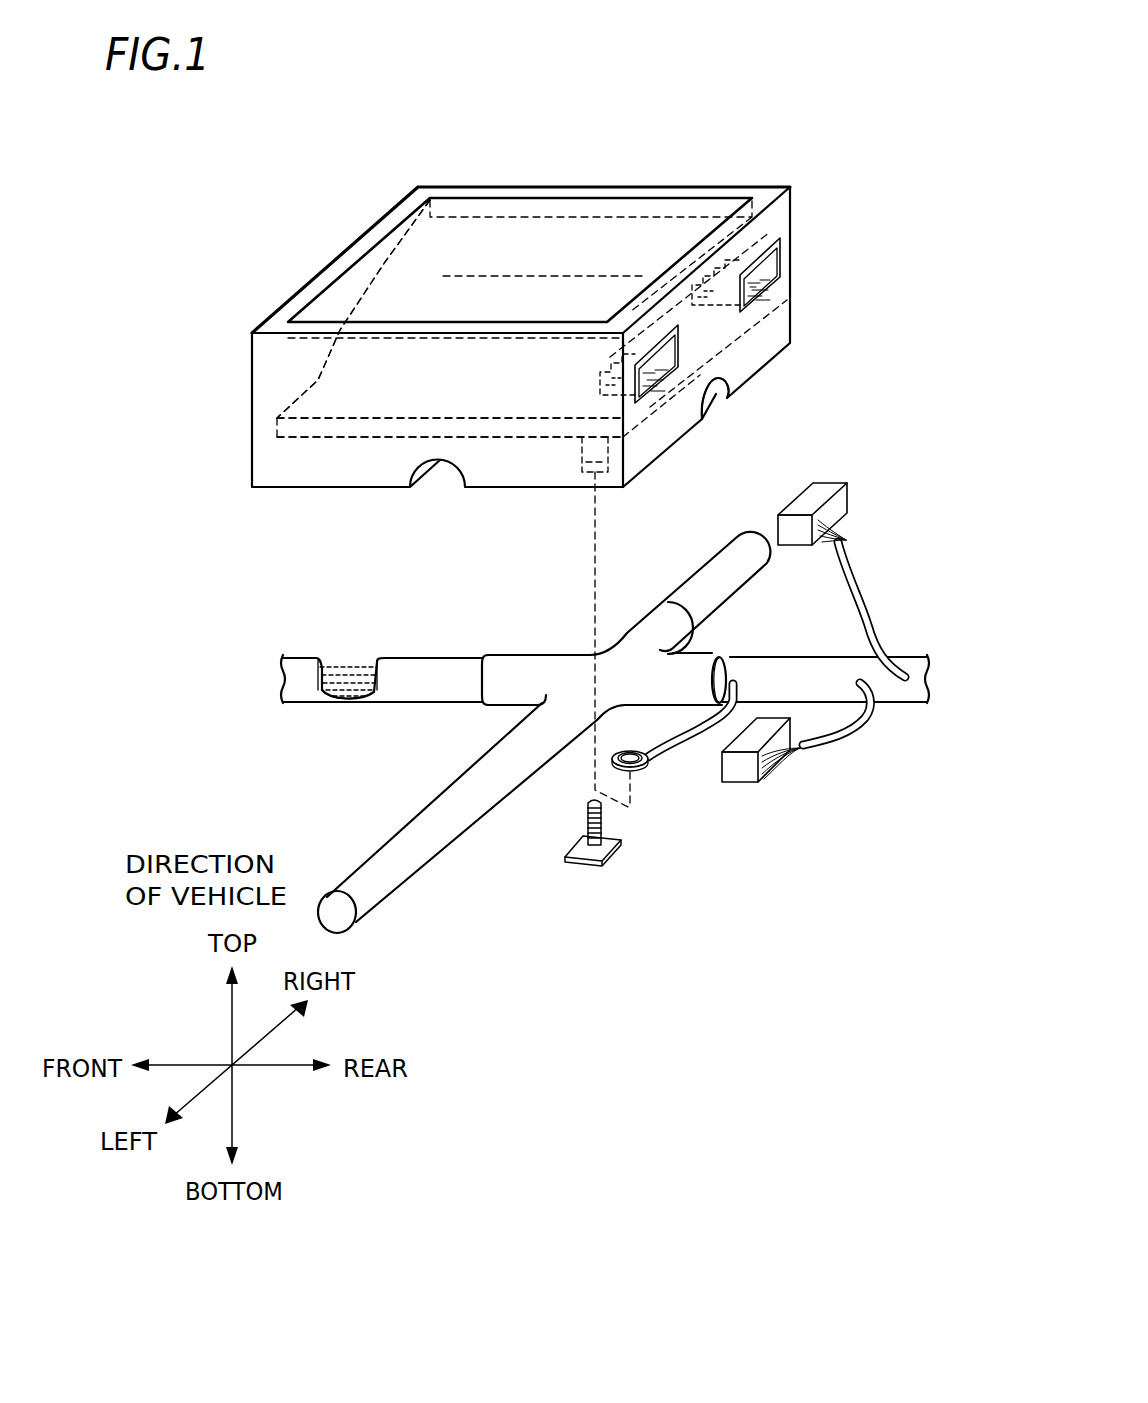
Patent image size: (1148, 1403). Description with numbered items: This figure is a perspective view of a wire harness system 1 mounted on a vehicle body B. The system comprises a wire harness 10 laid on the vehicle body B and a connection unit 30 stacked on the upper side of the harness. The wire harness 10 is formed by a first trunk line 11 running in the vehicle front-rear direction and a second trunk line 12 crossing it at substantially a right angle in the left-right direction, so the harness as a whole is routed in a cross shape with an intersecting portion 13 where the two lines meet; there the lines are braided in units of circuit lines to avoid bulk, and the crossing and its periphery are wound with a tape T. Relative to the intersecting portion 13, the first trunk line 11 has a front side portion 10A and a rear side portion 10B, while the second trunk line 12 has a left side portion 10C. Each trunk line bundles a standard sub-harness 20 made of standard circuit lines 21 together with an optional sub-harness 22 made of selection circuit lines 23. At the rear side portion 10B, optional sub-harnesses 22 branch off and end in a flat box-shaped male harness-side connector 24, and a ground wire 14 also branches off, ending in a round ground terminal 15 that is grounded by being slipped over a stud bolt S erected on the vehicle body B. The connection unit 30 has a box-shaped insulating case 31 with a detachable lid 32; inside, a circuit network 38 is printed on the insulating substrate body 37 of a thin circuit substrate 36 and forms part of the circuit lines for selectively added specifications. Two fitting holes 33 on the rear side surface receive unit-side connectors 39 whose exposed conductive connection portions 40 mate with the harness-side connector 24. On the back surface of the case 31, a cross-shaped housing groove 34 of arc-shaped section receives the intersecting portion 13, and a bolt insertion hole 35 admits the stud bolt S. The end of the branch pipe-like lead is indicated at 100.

The wire harness system 1 is at (347, 172).
The wire harness 10 is at (418, 878).
The front side portion 10A is at (443, 665).
The rear side portion 10B is at (905, 656).
The left side portion 10C is at (447, 836).
The first trunk line 11 is at (485, 655).
The second trunk line 12 is at (378, 898).
The intersecting portion 13 is at (625, 632).
The ground wire 14 is at (683, 740).
The ground terminal 15 is at (640, 775).
The standard sub-harness 20 is at (332, 665).
The standard circuit lines 21 is at (355, 672).
The optional sub-harness 22 is at (870, 575).
The selection circuit lines 23 is at (848, 518).
The harness-side connector 24 is at (822, 492).
The connection unit 30 is at (497, 178).
The case 31 is at (568, 190).
The lid 32 is at (441, 205).
The fitting holes 33 is at (788, 257).
The housing groove 34 is at (720, 398).
The bolt insertion hole 35 is at (600, 478).
The circuit substrate 36 is at (330, 388).
The substrate body 37 is at (293, 402).
The circuit network 38 is at (275, 420).
The unit-side connector 39 is at (762, 302).
The connection portions 40 is at (782, 278).
The branch pipe end 100 is at (745, 588).
The tape T is at (560, 655).
The stud bolt S is at (583, 824).
The vehicle body B is at (803, 810).